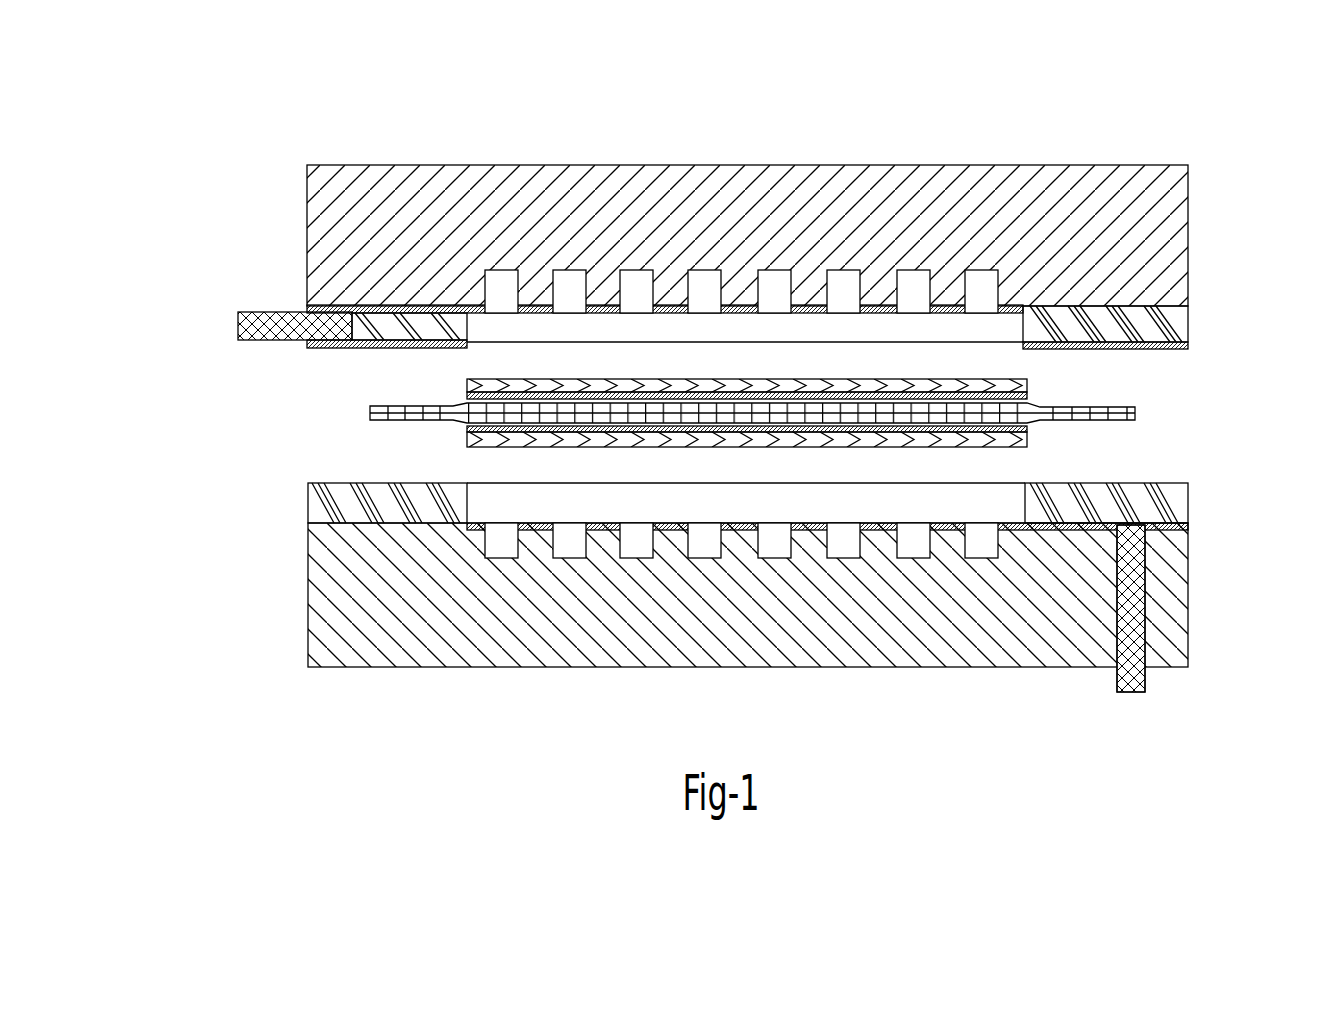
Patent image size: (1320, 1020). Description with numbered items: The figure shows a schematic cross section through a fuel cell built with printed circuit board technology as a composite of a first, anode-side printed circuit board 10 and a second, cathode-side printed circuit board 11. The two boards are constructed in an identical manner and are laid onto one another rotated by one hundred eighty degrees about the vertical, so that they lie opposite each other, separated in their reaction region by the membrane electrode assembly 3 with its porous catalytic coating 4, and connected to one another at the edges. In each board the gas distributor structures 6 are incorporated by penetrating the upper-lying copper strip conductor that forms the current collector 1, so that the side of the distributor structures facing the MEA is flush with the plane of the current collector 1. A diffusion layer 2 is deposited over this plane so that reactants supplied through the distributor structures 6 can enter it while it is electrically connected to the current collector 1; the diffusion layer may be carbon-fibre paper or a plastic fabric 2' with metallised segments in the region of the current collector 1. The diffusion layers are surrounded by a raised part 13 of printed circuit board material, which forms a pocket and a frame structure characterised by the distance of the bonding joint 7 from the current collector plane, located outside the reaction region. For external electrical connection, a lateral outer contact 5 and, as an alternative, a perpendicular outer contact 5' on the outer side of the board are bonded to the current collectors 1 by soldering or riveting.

The current collector 1 is at (538, 301).
The diffusion layer 2 is at (872, 417).
The plastic fabric 2' is at (747, 256).
The membrane electrode assembly 3 is at (378, 413).
The porous catalytic coating 4 is at (925, 390).
The lateral outer contact 5 is at (223, 296).
The perpendicular outer contact 5' is at (1209, 608).
The gas distributor structure 6 is at (845, 292).
The bonding joint 7 is at (1112, 338).
The anode-side printed circuit board 10 is at (365, 200).
The cathode-side printed circuit board 11 is at (362, 623).
The raised part 13 is at (375, 318).